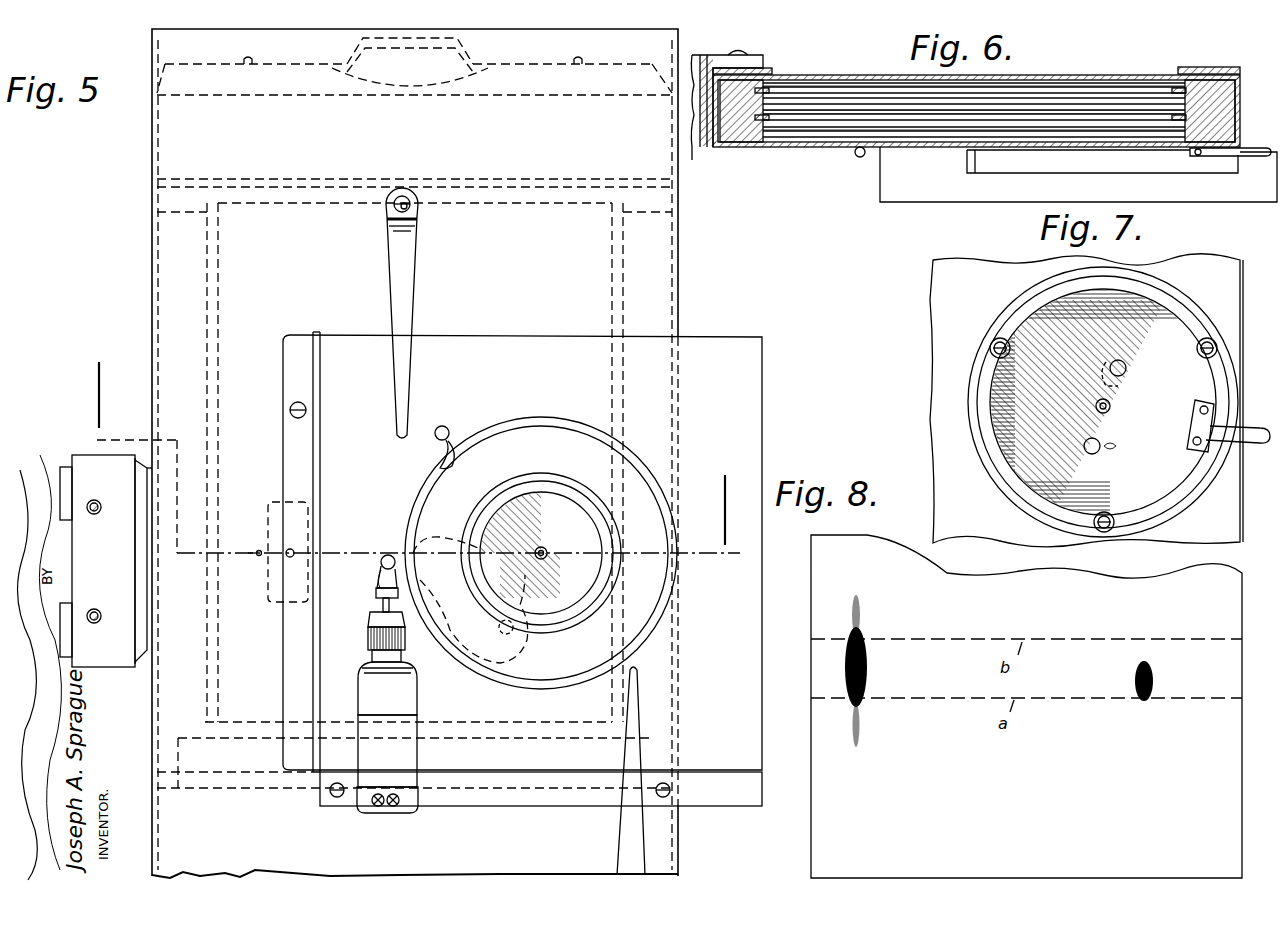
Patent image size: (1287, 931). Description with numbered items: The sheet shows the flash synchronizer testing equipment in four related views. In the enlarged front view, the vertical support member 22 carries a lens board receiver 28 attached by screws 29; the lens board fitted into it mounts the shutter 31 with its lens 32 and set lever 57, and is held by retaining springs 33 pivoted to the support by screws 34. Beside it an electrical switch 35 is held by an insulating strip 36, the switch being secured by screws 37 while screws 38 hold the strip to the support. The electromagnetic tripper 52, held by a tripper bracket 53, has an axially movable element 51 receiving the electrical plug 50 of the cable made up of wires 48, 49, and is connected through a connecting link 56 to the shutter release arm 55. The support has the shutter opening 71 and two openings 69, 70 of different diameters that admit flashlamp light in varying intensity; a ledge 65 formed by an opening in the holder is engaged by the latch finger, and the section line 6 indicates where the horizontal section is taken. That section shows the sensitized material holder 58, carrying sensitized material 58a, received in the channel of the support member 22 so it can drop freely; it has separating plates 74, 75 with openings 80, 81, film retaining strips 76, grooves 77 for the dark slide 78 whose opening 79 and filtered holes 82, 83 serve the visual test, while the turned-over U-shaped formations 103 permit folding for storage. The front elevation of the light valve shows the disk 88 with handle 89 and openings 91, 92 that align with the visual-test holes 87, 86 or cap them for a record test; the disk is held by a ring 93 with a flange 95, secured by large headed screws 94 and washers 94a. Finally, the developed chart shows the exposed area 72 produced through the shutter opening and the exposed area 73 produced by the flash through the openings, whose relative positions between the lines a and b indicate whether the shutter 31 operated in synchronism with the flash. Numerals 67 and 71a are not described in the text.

In FIG. 5, the section line 6— 6 is at (411, 440).
In FIG. 5, the vertical support member 22 is at (680, 866).
In FIG. 6, the vertical support member 22 is at (1240, 102).
In FIG. 7, the vertical support member 22 is at (1205, 264).
In FIG. 5, the lens board receiver 28 is at (296, 746).
In FIG. 6, the lens board receiver 28 is at (1256, 200).
In FIG. 5, the screws 29 is at (290, 408).
In FIG. 6, the screws 29 is at (860, 157).
In FIG. 5, the shutter 31 is at (633, 468).
In FIG. 5, the lens 32 is at (578, 607).
In FIG. 5, the retaining springs 33 is at (403, 294).
In FIG. 5, the screws 34 is at (411, 210).
In FIG. 5, the electrical switch 35 is at (125, 578).
In FIG. 6, the electrical switch 35 is at (694, 150).
In FIG. 6, the insulating strip 36 is at (704, 62).
In FIG. 5, the screws 37 is at (95, 500).
In FIG. 6, the screws 38 is at (744, 52).
In FIG. 5, the wire 48 is at (378, 808).
In FIG. 5, the wire 49 is at (394, 808).
In FIG. 5, the electrical plug 50 is at (368, 812).
In FIG. 5, the axially movable element 51 is at (412, 812).
In FIG. 5, the electromagnetic tripper 52 is at (397, 750).
In FIG. 5, the tripper bracket 53 is at (406, 699).
In FIG. 5, the shutter release arm 55 is at (401, 557).
In FIG. 5, the connecting link 56 is at (376, 590).
In FIG. 5, the set lever 57 is at (448, 430).
In FIG. 5, the sensitized material holder 58 is at (650, 292).
In FIG. 6, the sensitized material holder 58 is at (1224, 120).
In FIG. 6, the sensitized material 58a is at (914, 128).
In FIG. 8, the sensitized material 58a is at (812, 832).
In FIG. 5, the ledge 65 is at (306, 206).
In FIG. 5, the housing side 67 is at (158, 630).
In FIG. 5, the opening 69 is at (256, 556).
In FIG. 6, the opening 69 is at (814, 150).
In FIG. 5, the opening 70 is at (259, 550).
In FIG. 6, the opening 70 is at (822, 148).
In FIG. 5, the shutter opening 71 is at (543, 550).
In FIG. 6, the shutter opening 71 is at (1104, 148).
In FIG. 7, the shutter opening 71 is at (1111, 405).
In FIG. 6, the spindle bushing 71a is at (1104, 152).
In FIG. 7, the spindle bushing 71a is at (1107, 410).
In FIG. 8, the exposed area 72 is at (1155, 679).
In FIG. 8, the exposed area 73 is at (868, 678).
In FIG. 6, the separating plate 74 is at (1094, 104).
In FIG. 6, the separating plate 75 is at (1070, 96).
In FIG. 6, the film retaining strips 76 is at (770, 92).
In FIG. 6, the grooves 77 is at (800, 130).
In FIG. 6, the dark slide 78 is at (1048, 84).
In FIG. 5, the opening 79 is at (296, 552).
In FIG. 6, the opening 79 is at (843, 92).
In FIG. 6, the opening 80 is at (858, 110).
In FIG. 5, the opening 81 is at (290, 573).
In FIG. 6, the opening 81 is at (860, 118).
In FIG. 5, the hole 82 is at (285, 604).
In FIG. 5, the hole 83 is at (318, 512).
In FIG. 7, the hole 86 is at (1118, 446).
In FIG. 7, the hole 87 is at (1126, 379).
In FIG. 6, the light valve disk 88 is at (1018, 152).
In FIG. 7, the light valve disk 88 is at (1055, 468).
In FIG. 6, the handle 89 is at (1253, 157).
In FIG. 7, the handle 89 is at (1260, 444).
In FIG. 7, the opening 91 is at (1127, 368).
In FIG. 7, the opening 92 is at (1093, 455).
In FIG. 6, the ring 93 is at (966, 160).
In FIG. 7, the ring 93 is at (1196, 506).
In FIG. 7, the large headed screws 94 is at (995, 342).
In FIG. 7, the washers 94a is at (1074, 556).
In FIG. 6, the flange 95 is at (975, 174).
In FIG. 7, the flange 95 is at (1180, 304).
In FIG. 6, the U-shaped formations 103 is at (772, 70).